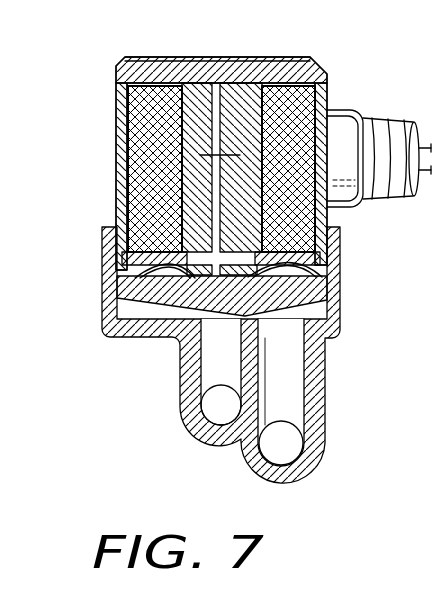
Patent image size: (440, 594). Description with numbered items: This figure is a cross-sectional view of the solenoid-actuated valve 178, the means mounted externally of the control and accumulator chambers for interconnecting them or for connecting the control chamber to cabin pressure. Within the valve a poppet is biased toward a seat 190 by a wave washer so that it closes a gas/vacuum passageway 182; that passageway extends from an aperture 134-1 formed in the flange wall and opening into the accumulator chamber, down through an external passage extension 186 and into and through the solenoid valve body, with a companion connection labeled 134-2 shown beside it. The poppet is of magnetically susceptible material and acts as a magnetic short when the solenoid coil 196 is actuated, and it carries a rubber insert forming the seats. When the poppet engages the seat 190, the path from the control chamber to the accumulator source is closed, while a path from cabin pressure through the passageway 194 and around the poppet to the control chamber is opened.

The solenoid-actuated valve 178 is at (81, 62).
The passageway 194 is at (222, 150).
The solenoid coil 196 is at (290, 106).
The seat 190 is at (250, 313).
The gas/vacuum passageway 182 is at (203, 381).
The external passage extension 186 is at (300, 388).
The aperture 134-1 is at (214, 404).
The second conduit 134-2 is at (283, 458).